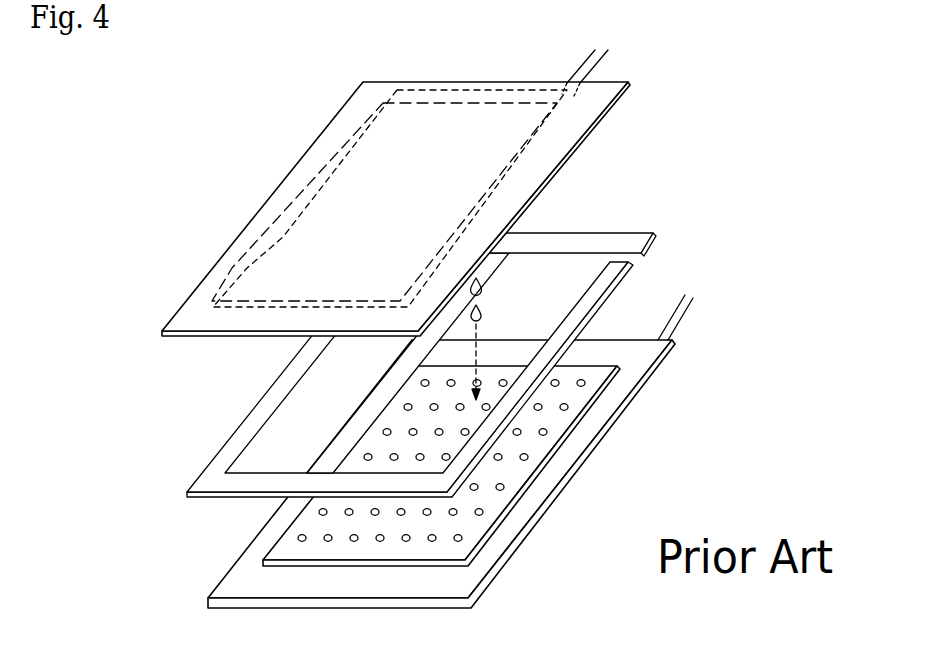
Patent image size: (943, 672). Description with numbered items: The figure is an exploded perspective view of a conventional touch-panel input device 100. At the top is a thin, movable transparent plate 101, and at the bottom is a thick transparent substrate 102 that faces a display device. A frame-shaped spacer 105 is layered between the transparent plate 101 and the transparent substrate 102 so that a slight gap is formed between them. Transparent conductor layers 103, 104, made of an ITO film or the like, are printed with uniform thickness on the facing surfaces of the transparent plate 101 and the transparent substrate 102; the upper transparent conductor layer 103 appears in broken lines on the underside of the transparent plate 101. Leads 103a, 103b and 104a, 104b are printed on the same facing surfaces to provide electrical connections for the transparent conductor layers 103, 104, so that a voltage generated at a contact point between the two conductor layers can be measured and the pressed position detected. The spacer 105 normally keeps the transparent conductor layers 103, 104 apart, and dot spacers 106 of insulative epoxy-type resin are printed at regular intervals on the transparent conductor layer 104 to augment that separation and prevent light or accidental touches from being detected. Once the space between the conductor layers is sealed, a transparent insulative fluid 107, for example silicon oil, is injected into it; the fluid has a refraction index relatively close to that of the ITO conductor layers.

The touch-panel input device 100 is at (435, 341).
The transparent plate 101 is at (300, 175).
The transparent substrate 102 is at (443, 583).
The transparent conductor layer 103 is at (313, 253).
The lead 103a is at (579, 68).
The lead 103b is at (604, 59).
The transparent conductor layer 104 is at (397, 528).
The lead 104a is at (678, 308).
The lead 104b is at (682, 317).
The frame-shaped spacer 105 is at (592, 243).
The dot spacers 106 is at (462, 538).
The transparent insulative fluid 107 is at (481, 288).